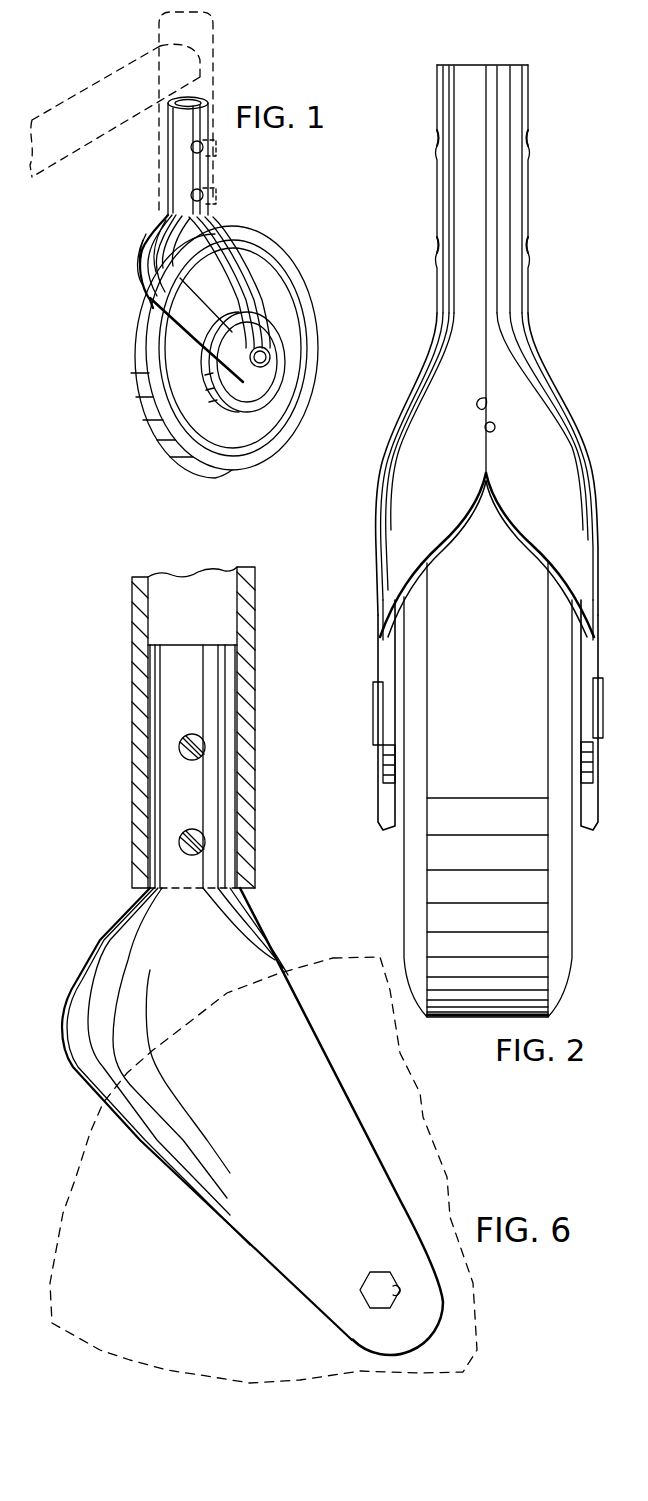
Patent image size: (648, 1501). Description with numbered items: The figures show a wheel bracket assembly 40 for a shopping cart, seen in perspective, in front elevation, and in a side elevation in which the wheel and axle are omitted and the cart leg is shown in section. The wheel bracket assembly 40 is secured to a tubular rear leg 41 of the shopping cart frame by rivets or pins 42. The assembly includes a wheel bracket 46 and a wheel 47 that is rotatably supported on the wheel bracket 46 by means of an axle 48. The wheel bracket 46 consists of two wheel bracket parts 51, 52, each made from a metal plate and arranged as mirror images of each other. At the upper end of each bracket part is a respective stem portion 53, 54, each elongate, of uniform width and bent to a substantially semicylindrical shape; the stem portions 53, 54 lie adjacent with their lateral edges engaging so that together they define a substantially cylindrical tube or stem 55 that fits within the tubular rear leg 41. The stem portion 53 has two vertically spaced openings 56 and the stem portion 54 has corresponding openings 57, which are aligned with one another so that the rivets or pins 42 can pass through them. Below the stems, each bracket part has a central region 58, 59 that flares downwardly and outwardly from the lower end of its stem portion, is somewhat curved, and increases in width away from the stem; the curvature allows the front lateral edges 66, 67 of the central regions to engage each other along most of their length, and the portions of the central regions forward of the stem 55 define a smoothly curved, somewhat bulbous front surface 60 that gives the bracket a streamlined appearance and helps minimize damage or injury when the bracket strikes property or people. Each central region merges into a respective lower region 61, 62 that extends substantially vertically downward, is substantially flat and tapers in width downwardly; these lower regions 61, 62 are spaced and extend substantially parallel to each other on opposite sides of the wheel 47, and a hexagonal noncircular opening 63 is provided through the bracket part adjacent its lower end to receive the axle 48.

In FIG. 1, the wheel bracket assembly 40 is at (278, 207).
In FIG. 2, the wheel bracket assembly 40 is at (579, 378).
In FIG. 1, the tubular rear leg 41 is at (214, 33).
In FIG. 6, the tubular rear leg 41 is at (138, 600).
In FIG. 1, the rivets or pins 42 is at (217, 148).
In FIG. 6, the rivets or pins 42 is at (185, 747).
In FIG. 1, the wheel bracket 46 is at (124, 245).
In FIG. 2, the wheel bracket 46 is at (367, 505).
In FIG. 6, the wheel bracket 46 is at (77, 972).
In FIG. 1, the wheel 47 is at (151, 447).
In FIG. 2, the wheel 47 is at (578, 943).
In FIG. 6, the wheel 47 is at (72, 1172).
In FIG. 1, the axle 48 is at (271, 347).
In FIG. 2, the axle 48 is at (372, 710).
In FIG. 1, the wheel bracket part 51 is at (255, 248).
In FIG. 2, the wheel bracket part 51 is at (590, 453).
In FIG. 6, the wheel bracket part 51 is at (305, 1013).
In FIG. 1, the wheel bracket part 52 is at (134, 290).
In FIG. 2, the wheel bracket part 52 is at (373, 483).
In FIG. 2, the stem portion 53 is at (515, 210).
In FIG. 6, the stem portion 53 is at (183, 795).
In FIG. 2, the stem portion 54 is at (460, 205).
In FIG. 1, the stem 55 is at (210, 116).
In FIG. 2, the stem 55 is at (531, 102).
In FIG. 2, the openings 56 is at (523, 253).
In FIG. 6, the openings 56 is at (207, 753).
In FIG. 2, the openings 57 is at (442, 248).
In FIG. 1, the central region 58 is at (188, 253).
In FIG. 2, the central region 58 is at (552, 447).
In FIG. 6, the central region 58 is at (200, 945).
In FIG. 1, the central region 59 is at (148, 245).
In FIG. 2, the central region 59 is at (413, 440).
In FIG. 1, the front surface 60 is at (147, 238).
In FIG. 6, the front surface 60 is at (97, 942).
In FIG. 2, the lower region 61 is at (600, 672).
In FIG. 6, the lower region 61 is at (327, 1187).
In FIG. 2, the lower region 62 is at (392, 668).
In FIG. 6, the noncircular opening 63 is at (397, 1298).
In FIG. 2, the front lateral edge 66 is at (482, 403).
In FIG. 2, the front lateral edge 67 is at (488, 432).